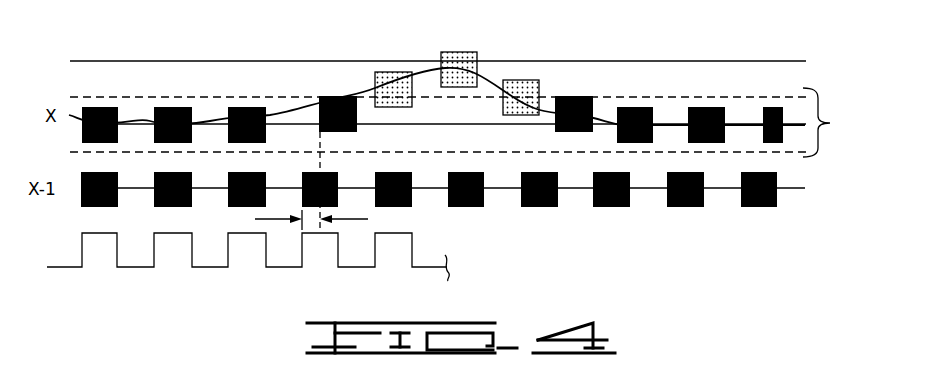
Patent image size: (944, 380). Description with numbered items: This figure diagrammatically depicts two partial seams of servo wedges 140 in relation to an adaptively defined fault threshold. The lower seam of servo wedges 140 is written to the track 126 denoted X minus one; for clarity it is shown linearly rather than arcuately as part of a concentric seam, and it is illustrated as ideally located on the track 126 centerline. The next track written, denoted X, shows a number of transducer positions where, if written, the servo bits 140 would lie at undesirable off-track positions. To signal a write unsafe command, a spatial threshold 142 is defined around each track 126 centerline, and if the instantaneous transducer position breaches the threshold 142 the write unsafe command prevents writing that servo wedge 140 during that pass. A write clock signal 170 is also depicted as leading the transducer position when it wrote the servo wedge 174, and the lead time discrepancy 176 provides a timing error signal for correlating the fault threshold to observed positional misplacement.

The servo wedges 140 is at (635, 107).
The spatial threshold 142 is at (830, 123).
The servo wedge 174 is at (338, 97).
The lead time discrepancy 176 is at (290, 221).
The track 126 is at (795, 190).
The write clock signal 170 is at (63, 267).